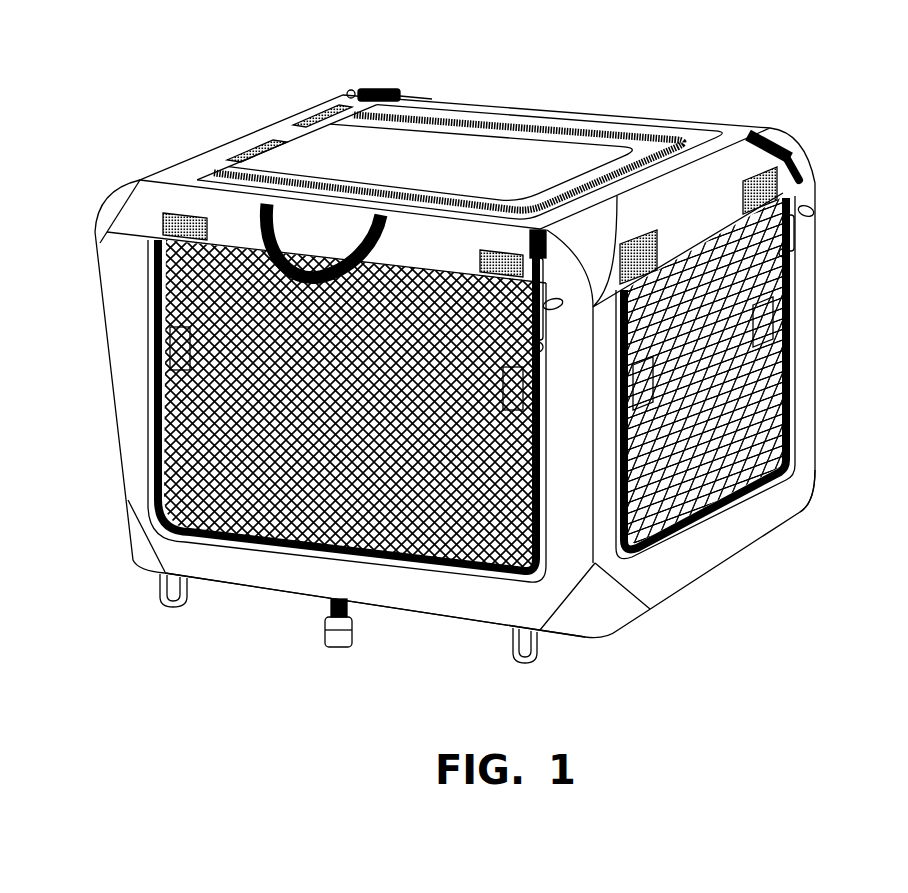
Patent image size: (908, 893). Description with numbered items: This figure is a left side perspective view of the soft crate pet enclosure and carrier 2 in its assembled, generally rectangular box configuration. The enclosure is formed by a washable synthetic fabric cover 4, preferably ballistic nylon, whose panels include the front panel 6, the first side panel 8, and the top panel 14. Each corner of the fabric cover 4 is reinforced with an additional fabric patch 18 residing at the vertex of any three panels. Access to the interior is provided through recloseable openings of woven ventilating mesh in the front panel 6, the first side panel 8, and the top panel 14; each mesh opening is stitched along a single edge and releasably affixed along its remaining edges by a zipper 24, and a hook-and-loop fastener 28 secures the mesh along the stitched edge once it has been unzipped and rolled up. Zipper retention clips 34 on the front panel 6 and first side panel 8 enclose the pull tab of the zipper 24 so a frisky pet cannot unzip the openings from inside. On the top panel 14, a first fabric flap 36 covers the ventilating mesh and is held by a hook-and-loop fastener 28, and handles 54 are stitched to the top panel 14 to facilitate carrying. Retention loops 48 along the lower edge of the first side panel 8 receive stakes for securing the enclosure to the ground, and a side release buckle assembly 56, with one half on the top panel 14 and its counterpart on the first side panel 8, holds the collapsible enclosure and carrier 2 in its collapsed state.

The soft crate pet enclosure and carrier 2 is at (705, 66).
The fabric cover 4 is at (163, 358).
The front panel 6 is at (712, 555).
The first side panel 8 is at (240, 570).
The top panel 14 is at (168, 178).
The fabric patch 18 is at (803, 500).
The zipper 24 is at (793, 247).
The hook-and-loop fastener 28 is at (323, 103).
The zipper retention clip 34 is at (793, 157).
The first fabric flap 36 is at (467, 133).
The retention loop 48 is at (160, 603).
The handle 54 is at (247, 223).
The side release buckle assembly 56 is at (320, 610).